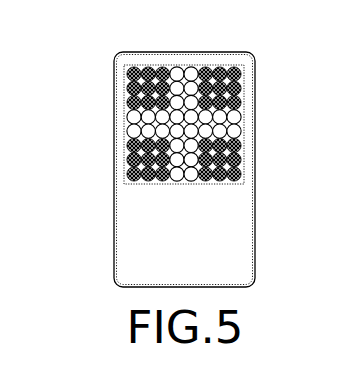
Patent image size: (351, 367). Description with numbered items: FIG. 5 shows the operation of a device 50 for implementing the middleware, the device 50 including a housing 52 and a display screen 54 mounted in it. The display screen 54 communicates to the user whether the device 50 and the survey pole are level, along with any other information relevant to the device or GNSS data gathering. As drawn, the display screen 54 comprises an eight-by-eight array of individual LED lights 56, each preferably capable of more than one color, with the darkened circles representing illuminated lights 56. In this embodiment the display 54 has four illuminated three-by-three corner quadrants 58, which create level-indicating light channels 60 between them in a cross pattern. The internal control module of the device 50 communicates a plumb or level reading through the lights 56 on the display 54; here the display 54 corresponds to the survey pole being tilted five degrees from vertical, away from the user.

The device 50 is at (227, 169).
The housing 52 is at (256, 270).
The display screen 54 is at (245, 124).
The LED lights 56 is at (215, 67).
The corner quadrants 58 is at (246, 62).
The level-indicating light channels 60 is at (165, 130).